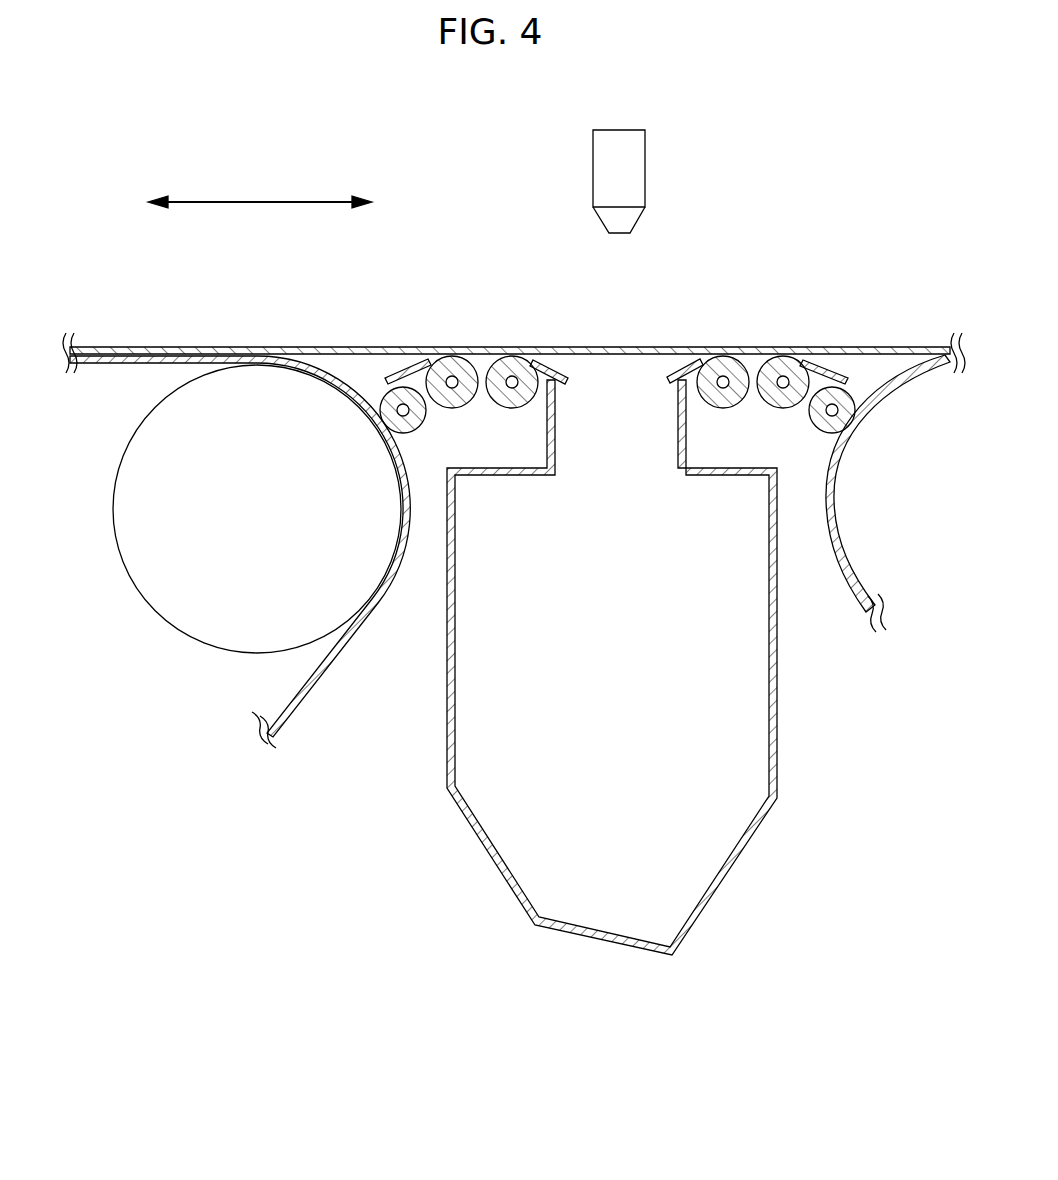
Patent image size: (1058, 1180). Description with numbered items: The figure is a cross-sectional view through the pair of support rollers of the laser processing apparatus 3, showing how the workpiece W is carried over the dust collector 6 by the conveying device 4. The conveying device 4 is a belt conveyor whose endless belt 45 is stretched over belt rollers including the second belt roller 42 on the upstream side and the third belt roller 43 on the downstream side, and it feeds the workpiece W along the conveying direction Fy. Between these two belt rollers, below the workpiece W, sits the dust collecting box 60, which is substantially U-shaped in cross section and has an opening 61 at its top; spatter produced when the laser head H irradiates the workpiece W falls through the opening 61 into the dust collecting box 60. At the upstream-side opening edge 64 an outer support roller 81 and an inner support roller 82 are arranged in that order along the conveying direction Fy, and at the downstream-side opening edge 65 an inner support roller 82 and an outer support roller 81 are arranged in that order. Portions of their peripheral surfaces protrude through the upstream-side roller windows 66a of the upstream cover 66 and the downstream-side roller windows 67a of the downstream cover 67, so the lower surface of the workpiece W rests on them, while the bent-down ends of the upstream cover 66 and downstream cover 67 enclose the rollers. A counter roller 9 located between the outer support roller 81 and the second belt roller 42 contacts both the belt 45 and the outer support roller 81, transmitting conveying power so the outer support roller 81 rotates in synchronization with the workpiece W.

The workpiece W is at (155, 347).
The conveying direction Fy is at (305, 200).
The laser head H is at (623, 135).
The laser processing apparatus 3 is at (860, 170).
The conveying device 4 is at (279, 812).
The dust collector 6 is at (778, 957).
The counter roller 9 is at (365, 360).
The second belt roller 42 is at (112, 506).
The third belt roller 43 is at (862, 552).
The belt 45 is at (293, 703).
The dust collecting box 60 is at (447, 770).
The opening 61 is at (626, 368).
The upstream-side opening edge 64 is at (486, 318).
The downstream-side opening edge 65 is at (820, 315).
The upstream cover 66 is at (416, 362).
The upstream-side roller window 66a is at (528, 358).
The downstream cover 67 is at (843, 362).
The downstream-side roller window 67a is at (708, 360).
The outer support roller 81 is at (453, 358).
The inner support roller 82 is at (511, 358).